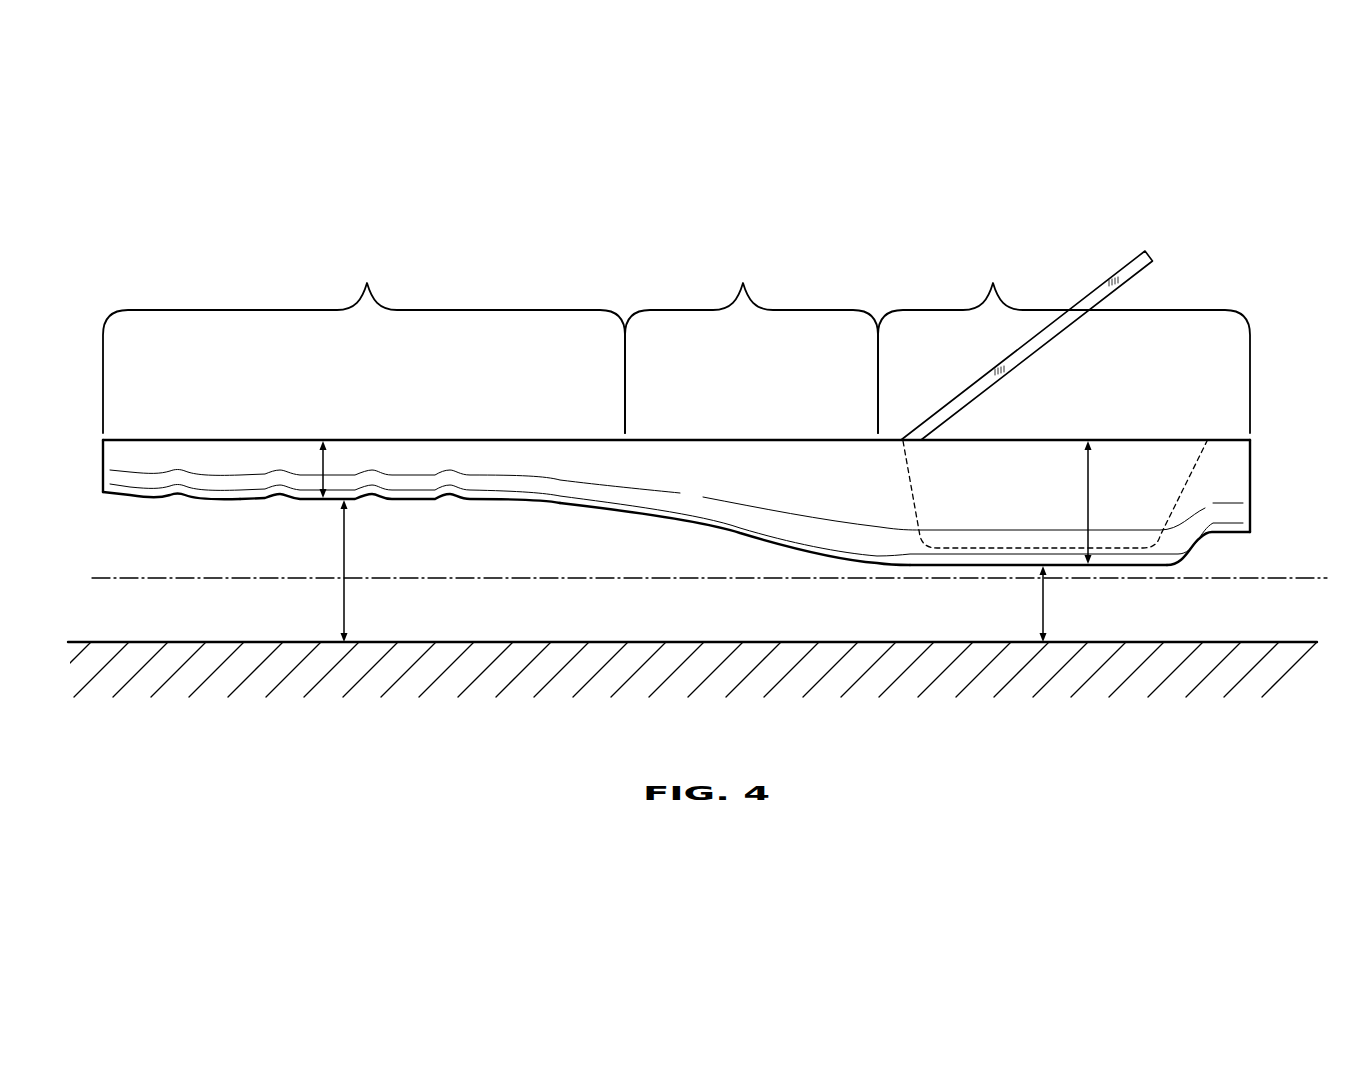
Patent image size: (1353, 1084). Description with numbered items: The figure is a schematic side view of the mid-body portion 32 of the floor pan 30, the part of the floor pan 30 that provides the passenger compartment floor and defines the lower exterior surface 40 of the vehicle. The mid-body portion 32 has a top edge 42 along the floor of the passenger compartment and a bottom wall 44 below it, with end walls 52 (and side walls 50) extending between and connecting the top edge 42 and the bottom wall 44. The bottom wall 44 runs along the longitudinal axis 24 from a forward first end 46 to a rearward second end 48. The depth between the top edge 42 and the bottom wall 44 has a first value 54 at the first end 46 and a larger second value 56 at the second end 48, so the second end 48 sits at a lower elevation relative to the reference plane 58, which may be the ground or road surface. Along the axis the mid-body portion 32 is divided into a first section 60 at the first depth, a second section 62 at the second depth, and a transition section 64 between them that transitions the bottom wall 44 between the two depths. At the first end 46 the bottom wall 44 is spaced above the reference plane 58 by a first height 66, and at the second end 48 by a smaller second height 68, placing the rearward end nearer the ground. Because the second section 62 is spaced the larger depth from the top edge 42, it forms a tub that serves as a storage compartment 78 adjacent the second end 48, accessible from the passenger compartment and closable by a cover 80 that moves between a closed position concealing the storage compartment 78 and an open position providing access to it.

The longitudinal axis 24 is at (135, 580).
The floor pan 30 is at (571, 432).
The mid-body portion 32 is at (518, 455).
The lower exterior surface 40 is at (583, 505).
The top edge 42 is at (803, 438).
The bottom wall 44 is at (740, 533).
The first end 46 is at (102, 493).
The second end 48 is at (1250, 533).
The side wall 50 is at (858, 507).
The end wall 52 is at (102, 463).
The first value of the depth 54 is at (322, 462).
The second value of the depth 56 is at (1090, 500).
The reference plane 58 is at (260, 640).
The first section 60 is at (367, 283).
The second section 62 is at (993, 283).
The transition section 64 is at (743, 283).
The first height 66 is at (342, 568).
The second height 68 is at (1045, 600).
The storage compartment 78 is at (1007, 470).
The cover 80 is at (1135, 273).